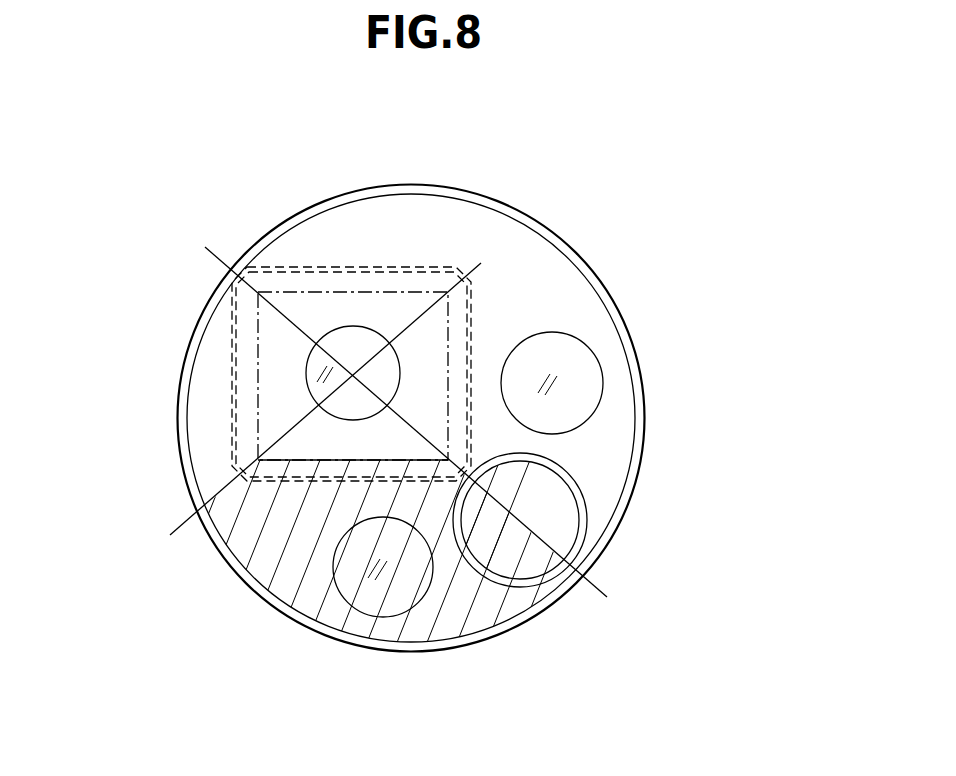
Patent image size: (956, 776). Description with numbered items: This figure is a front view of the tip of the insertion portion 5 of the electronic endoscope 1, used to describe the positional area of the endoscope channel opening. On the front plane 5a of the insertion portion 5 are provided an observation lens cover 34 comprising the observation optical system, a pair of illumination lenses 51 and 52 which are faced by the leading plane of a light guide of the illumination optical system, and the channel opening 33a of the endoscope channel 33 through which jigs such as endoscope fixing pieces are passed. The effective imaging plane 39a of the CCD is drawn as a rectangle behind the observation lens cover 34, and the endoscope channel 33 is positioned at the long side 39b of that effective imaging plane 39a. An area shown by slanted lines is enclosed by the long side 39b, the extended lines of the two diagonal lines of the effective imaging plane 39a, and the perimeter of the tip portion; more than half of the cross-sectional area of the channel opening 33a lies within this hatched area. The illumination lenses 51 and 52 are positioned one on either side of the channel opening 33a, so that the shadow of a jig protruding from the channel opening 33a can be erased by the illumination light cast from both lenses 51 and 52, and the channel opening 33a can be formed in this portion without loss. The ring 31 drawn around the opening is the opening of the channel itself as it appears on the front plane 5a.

The electronic endoscope 1 is at (143, 240).
The insertion portion 5 is at (643, 395).
The front plane of the insertion portion 5a is at (408, 228).
The observation lens cover 34 is at (353, 343).
The effective imaging plane of the CCD 39a is at (450, 334).
The long side of the effective imaging plane 39b is at (262, 460).
The illumination lens 52 is at (568, 352).
The illumination lens 51 is at (357, 592).
The forceps channel opening 31 is at (583, 512).
The endoscope channel 33 is at (500, 592).
The channel opening 33a is at (527, 557).